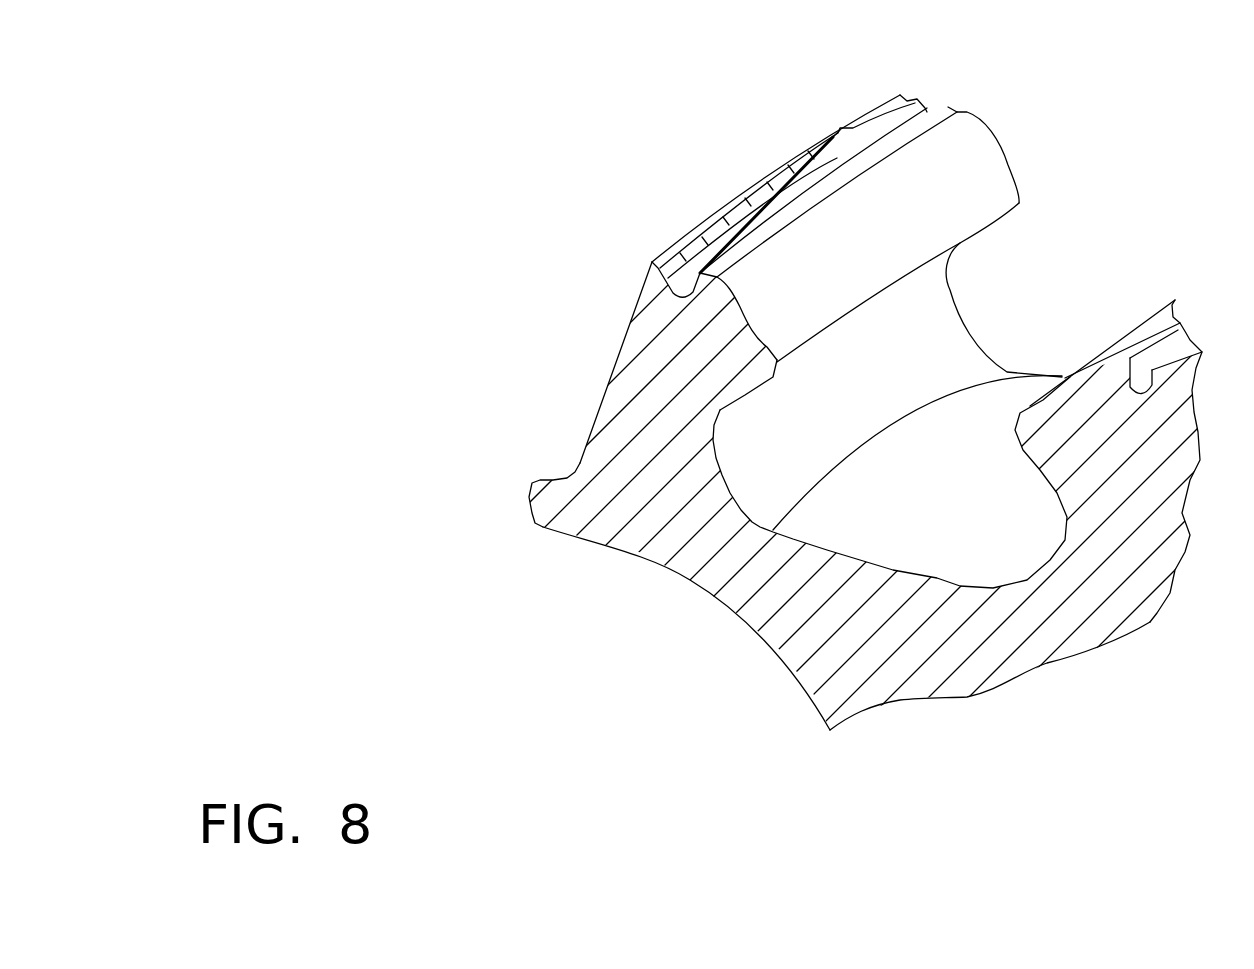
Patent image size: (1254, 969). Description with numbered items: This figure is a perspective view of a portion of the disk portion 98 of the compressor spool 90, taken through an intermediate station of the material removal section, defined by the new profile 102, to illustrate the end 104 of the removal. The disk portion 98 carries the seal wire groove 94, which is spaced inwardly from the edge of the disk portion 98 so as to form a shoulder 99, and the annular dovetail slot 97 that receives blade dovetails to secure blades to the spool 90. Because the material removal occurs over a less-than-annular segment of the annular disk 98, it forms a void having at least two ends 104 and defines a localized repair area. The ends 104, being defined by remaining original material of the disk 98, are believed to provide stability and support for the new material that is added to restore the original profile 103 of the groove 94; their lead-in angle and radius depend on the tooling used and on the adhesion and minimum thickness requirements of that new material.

The compressor spool 90 is at (580, 470).
The seal wire groove 94 is at (693, 313).
The dovetail slot 97 is at (722, 610).
The disk portion 98 is at (687, 493).
The shoulder 99 is at (870, 114).
The new profile 102 is at (680, 273).
The original profile 103 is at (909, 105).
The end 104 is at (827, 158).